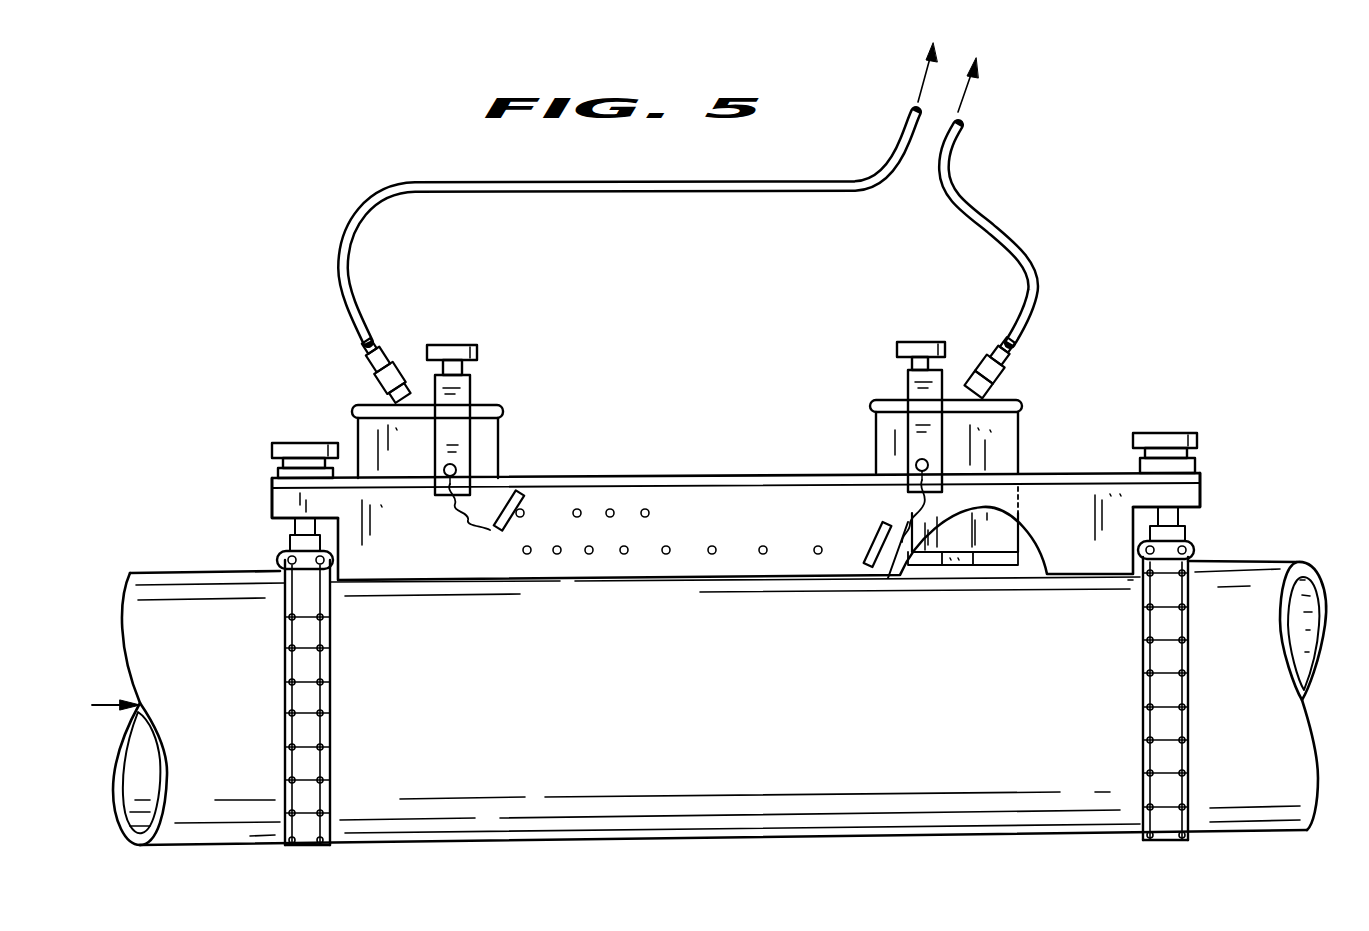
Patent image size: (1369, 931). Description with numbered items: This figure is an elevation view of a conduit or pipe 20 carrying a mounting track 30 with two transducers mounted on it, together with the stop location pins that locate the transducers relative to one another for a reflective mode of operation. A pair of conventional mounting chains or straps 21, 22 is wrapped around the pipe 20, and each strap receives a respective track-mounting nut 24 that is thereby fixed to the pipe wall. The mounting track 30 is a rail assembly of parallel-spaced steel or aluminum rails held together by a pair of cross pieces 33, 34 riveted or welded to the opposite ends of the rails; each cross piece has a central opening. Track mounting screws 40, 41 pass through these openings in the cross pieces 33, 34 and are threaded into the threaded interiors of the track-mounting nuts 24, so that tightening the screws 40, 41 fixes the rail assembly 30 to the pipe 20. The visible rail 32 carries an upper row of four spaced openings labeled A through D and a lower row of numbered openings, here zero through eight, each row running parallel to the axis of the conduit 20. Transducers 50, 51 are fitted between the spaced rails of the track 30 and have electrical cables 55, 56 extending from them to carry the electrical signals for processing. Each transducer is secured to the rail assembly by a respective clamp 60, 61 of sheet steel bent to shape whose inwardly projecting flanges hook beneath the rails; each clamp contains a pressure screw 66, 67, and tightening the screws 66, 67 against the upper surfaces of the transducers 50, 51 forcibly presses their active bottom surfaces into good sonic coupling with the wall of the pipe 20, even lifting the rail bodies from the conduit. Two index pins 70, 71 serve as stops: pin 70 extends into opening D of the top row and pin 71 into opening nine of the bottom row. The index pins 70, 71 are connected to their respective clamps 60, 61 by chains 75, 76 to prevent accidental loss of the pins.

The pipe 20 is at (712, 729).
The mounting chain or strap 21 is at (333, 700).
The mounting chain or strap 22 is at (1143, 700).
The track-mounting nut 24 is at (283, 552).
The mounting track 30 is at (610, 465).
The rail 32 is at (710, 503).
The cross piece 33 is at (270, 477).
The cross piece 34 is at (1202, 474).
The track mounting screw 40 is at (303, 442).
The track mounting screw 41 is at (1178, 422).
The transducer 50 is at (505, 440).
The transducer 51 is at (1020, 440).
The electrical cable 55 is at (601, 193).
The electrical cable 56 is at (1022, 243).
The clamp 60 is at (475, 393).
The clamp 61 is at (907, 386).
The pressure screw 66 is at (456, 342).
The pressure screw 67 is at (946, 313).
The index pin 70 is at (522, 497).
The index pin 71 is at (866, 534).
The chain 75 is at (488, 532).
The chain 76 is at (908, 522).